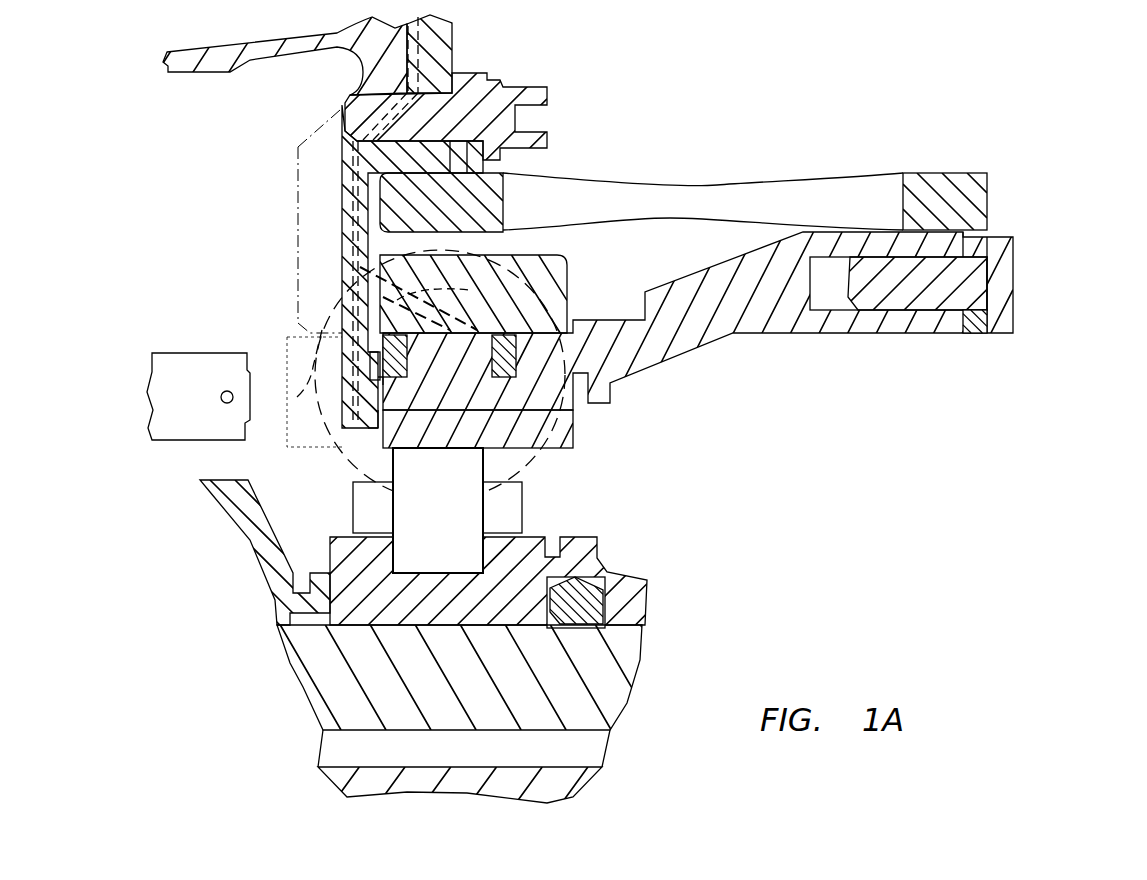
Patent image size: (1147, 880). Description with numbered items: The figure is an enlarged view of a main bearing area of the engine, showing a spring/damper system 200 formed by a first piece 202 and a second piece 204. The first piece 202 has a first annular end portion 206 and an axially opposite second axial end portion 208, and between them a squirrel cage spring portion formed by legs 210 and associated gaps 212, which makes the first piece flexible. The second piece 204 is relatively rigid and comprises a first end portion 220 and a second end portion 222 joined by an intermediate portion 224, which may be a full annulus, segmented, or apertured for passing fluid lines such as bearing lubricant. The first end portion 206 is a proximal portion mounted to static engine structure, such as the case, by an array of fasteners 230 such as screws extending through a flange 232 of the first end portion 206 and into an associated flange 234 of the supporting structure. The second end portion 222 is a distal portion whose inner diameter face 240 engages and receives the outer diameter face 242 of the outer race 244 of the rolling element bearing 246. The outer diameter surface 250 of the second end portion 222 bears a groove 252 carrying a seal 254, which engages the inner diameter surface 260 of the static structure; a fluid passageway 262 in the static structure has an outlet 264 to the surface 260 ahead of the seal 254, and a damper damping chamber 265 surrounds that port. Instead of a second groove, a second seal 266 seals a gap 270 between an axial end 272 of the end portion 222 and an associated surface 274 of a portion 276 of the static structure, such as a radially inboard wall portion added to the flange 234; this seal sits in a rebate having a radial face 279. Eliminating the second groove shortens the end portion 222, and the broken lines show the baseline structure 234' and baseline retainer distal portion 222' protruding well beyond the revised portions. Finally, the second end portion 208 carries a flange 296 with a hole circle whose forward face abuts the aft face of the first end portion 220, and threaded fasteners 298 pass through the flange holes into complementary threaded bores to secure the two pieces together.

The spring/damper system 200 is at (938, 86).
The first piece 202 is at (720, 145).
The second piece 204 is at (787, 358).
The first annular end portion 206 is at (454, 193).
The second axial end portion 208 is at (948, 196).
The legs 210 is at (856, 186).
The gaps 212 is at (765, 198).
The first end portion 220 is at (947, 245).
The second end portion 222 is at (421, 622).
The baseline retainer distal portion 222' is at (234, 407).
The intermediate portion 224 is at (697, 323).
The fasteners 230 is at (558, 81).
The flange 232 is at (470, 84).
The flange of the supporting structure 234 is at (355, 73).
The baseline structure 234' is at (262, 221).
The inner diameter face 240 is at (557, 443).
The outer diameter face 242 is at (407, 450).
The outer race 244 is at (517, 463).
The rolling element bearing 246 is at (395, 522).
The outer diameter surface 250 is at (500, 330).
The groove 252 is at (570, 331).
The seal 254 is at (527, 342).
The inner diameter surface 260 is at (473, 332).
The fluid passageway 262 is at (458, 290).
The outlet 264 is at (437, 430).
The damper damping chamber 265 is at (553, 297).
The second seal 266 is at (380, 350).
The gap 270 is at (370, 437).
The axial end 272 is at (377, 393).
The surface 274 is at (397, 360).
The portion of the static structure 276 is at (377, 421).
The radial face 279 is at (383, 377).
The flange 296 is at (978, 248).
The threaded fasteners 298 is at (1028, 295).